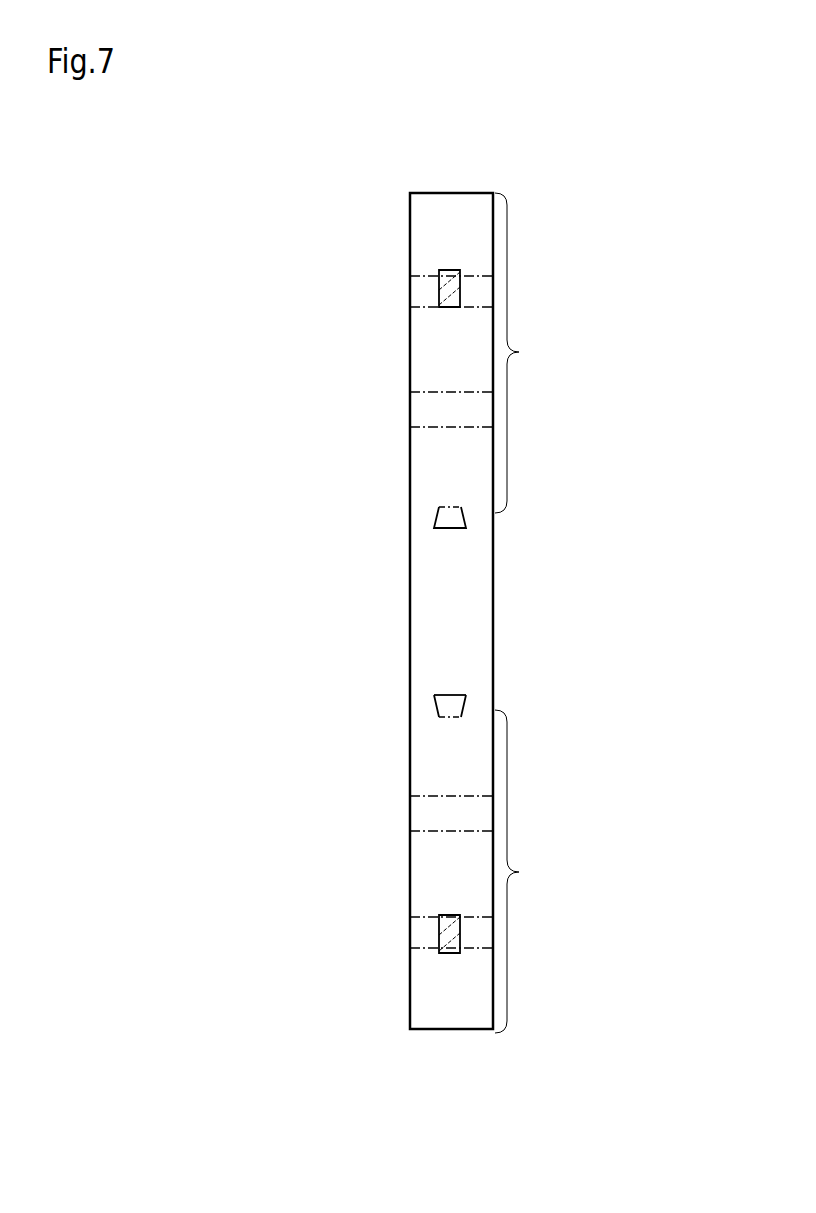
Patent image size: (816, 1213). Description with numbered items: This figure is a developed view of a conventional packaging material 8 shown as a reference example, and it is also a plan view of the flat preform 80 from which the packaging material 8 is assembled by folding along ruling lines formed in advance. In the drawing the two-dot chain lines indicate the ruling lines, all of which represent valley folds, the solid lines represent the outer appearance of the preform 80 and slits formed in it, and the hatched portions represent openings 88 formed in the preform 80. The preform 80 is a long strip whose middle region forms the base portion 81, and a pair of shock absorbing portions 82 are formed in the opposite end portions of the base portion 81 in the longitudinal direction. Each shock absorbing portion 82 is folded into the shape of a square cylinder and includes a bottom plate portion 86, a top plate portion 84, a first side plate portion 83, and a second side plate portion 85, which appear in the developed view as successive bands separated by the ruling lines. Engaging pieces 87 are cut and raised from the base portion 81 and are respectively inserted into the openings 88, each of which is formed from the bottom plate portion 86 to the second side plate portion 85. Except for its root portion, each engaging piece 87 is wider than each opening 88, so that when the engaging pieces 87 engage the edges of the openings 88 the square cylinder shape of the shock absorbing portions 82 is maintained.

The packaging material 8 is at (492, 601).
The preform 80 is at (542, 200).
The base portion 81 is at (424, 612).
The shock absorbing portion 82 is at (522, 613).
The first side plate portion 83 is at (424, 412).
The top plate portion 84 is at (424, 352).
The second side plate portion 85 is at (424, 288).
The bottom plate portion 86 is at (424, 242).
The engaging piece 87 is at (448, 520).
The opening 88 is at (447, 305).